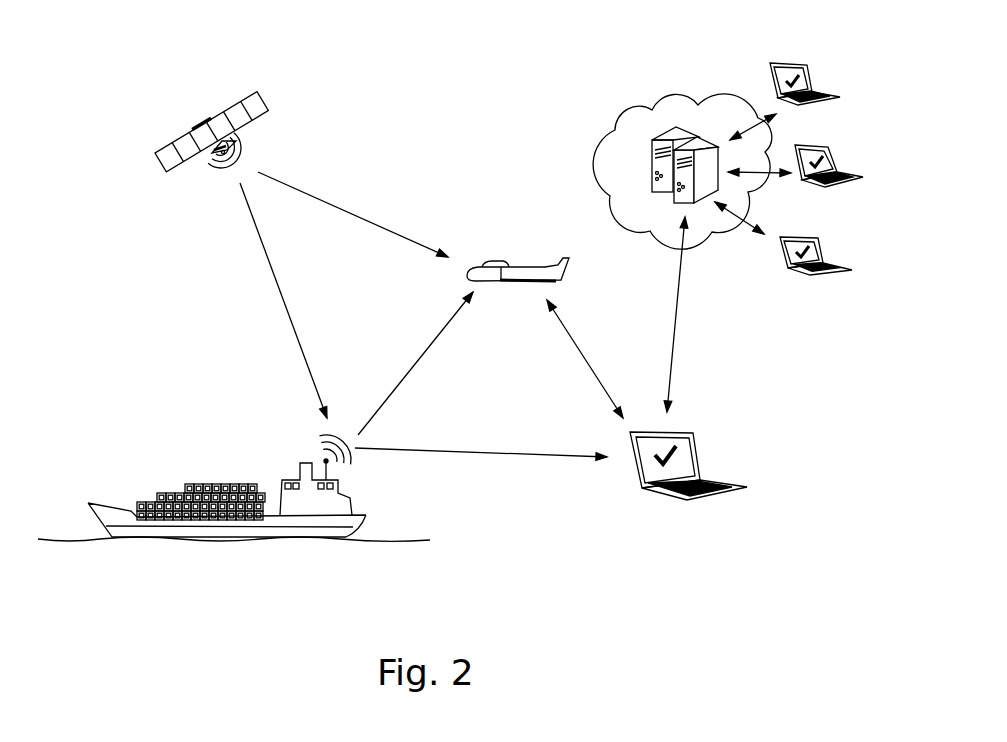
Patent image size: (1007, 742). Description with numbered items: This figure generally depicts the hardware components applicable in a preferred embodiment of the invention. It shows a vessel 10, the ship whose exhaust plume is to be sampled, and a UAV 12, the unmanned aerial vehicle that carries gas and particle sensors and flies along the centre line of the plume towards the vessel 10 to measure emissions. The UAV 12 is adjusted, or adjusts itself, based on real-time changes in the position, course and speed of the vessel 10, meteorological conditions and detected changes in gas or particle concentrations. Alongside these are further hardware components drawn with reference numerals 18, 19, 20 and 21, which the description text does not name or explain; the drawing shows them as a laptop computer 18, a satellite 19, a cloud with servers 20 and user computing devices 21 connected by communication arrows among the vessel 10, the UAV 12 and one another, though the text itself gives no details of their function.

The vessel 10 is at (170, 472).
The UAV 12 is at (527, 255).
The control computer (laptop) 18 is at (643, 493).
The satellite 19 is at (178, 110).
The cloud server network 20 is at (627, 110).
The user computing devices 21 is at (822, 288).